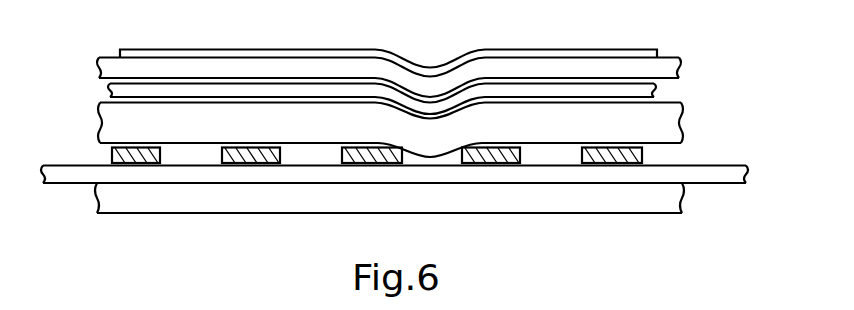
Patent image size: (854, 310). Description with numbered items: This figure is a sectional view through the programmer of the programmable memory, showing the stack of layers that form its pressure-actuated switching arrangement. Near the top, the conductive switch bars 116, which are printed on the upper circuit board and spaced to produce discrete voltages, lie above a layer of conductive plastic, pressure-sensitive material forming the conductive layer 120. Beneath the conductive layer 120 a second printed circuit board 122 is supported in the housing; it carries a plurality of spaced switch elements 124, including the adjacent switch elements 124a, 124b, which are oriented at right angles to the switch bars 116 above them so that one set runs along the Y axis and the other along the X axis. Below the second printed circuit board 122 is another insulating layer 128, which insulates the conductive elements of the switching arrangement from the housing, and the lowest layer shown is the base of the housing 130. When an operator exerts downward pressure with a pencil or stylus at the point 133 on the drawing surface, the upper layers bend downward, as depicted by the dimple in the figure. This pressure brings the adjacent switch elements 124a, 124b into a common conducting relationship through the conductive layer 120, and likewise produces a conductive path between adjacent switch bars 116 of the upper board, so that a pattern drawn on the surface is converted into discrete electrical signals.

The point 133 is at (432, 67).
The conductive switch bars 116 is at (110, 91).
The conductive layer 120 is at (661, 122).
The second printed circuit board 122 is at (563, 163).
The switch elements 124 is at (649, 158).
The switch element 124a is at (367, 164).
The switch element 124b is at (490, 164).
The insulating layer 128 is at (726, 175).
The base of the housing 130 is at (666, 207).